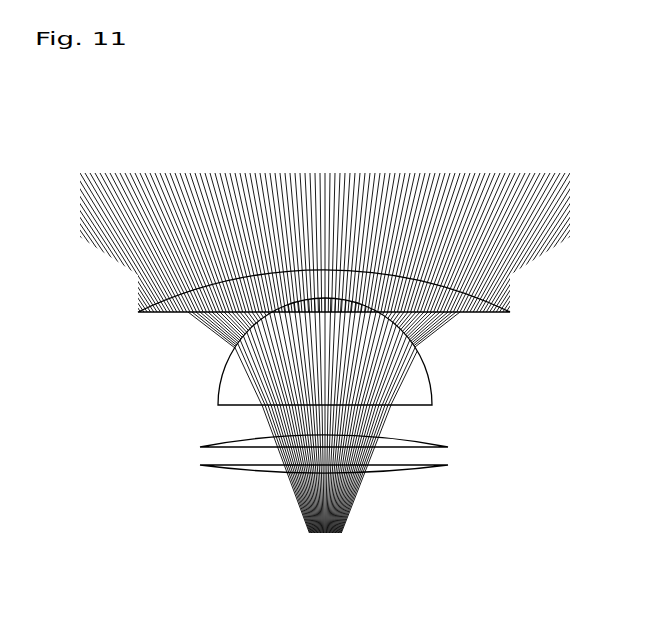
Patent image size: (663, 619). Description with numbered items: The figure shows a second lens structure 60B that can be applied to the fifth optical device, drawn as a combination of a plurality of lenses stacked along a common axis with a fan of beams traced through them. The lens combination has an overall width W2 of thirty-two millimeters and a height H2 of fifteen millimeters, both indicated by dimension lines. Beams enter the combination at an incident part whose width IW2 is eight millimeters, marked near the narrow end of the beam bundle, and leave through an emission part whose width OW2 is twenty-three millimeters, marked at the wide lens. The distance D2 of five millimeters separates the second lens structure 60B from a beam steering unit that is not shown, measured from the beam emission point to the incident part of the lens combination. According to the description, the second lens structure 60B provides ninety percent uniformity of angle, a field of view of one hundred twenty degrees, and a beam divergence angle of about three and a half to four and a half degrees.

The second lens structure 60B is at (602, 118).
The width W2 is at (510, 312).
The width of emission part OW2 is at (462, 343).
The height H2 is at (510, 273).
The distance D2 is at (448, 466).
The width of incident part IW2 is at (263, 480).